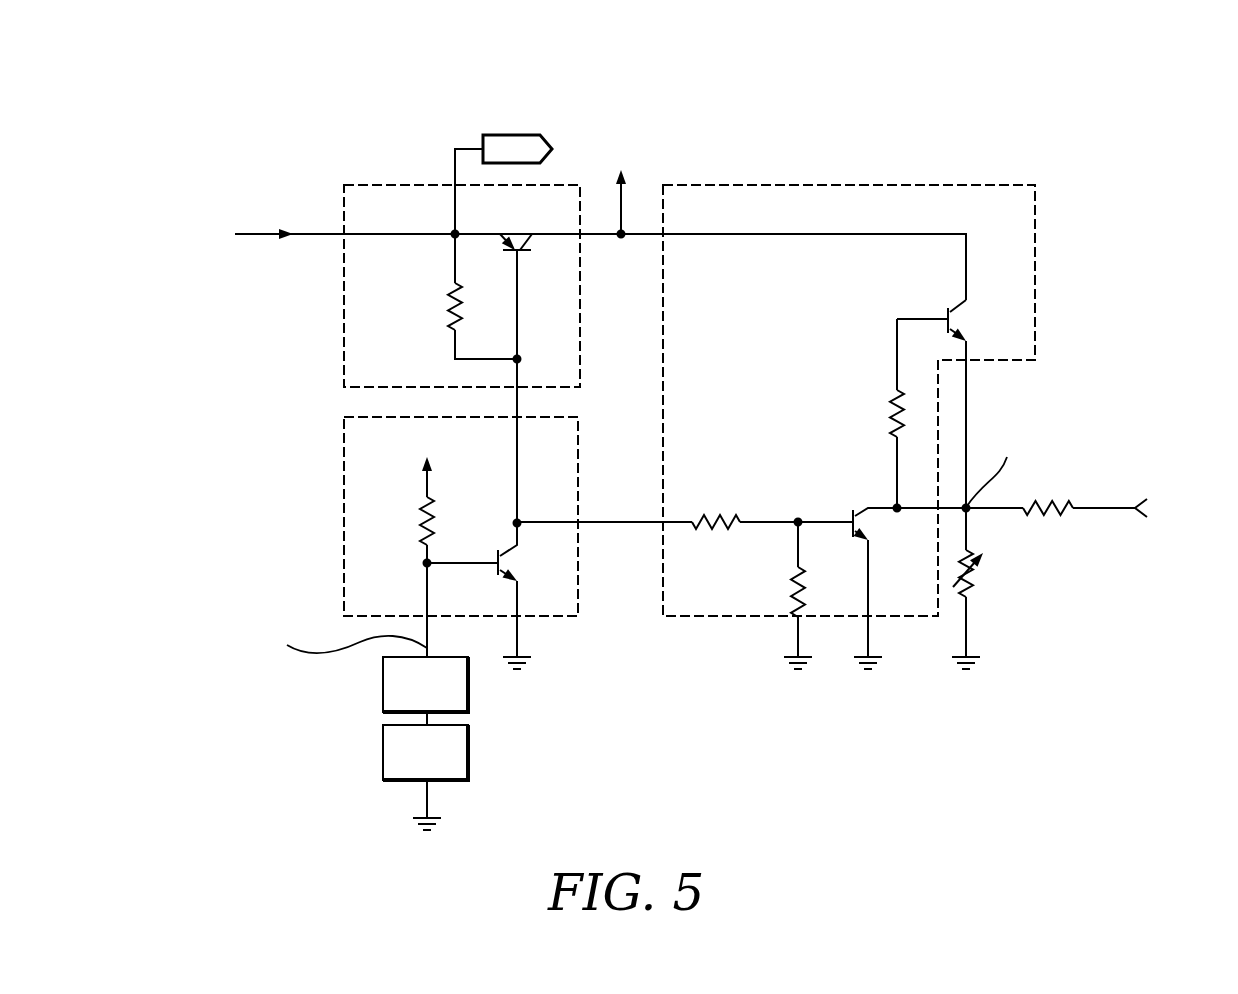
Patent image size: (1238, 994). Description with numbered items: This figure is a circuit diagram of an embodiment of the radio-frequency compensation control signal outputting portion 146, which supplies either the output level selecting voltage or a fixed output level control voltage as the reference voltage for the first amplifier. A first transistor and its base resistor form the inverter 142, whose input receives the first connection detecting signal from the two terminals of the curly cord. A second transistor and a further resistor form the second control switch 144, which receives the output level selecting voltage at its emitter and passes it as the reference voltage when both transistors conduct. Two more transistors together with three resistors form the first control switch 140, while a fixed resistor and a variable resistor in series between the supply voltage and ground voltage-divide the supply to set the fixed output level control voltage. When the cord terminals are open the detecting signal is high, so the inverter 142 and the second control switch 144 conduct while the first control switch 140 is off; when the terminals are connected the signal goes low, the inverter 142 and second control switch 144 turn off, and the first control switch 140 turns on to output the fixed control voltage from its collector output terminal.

The radio-frequency compensation control signal outputting portion 146 is at (1004, 130).
The first control switch 140 is at (827, 185).
The inverter 142 is at (344, 522).
The second control switch 144 is at (344, 320).